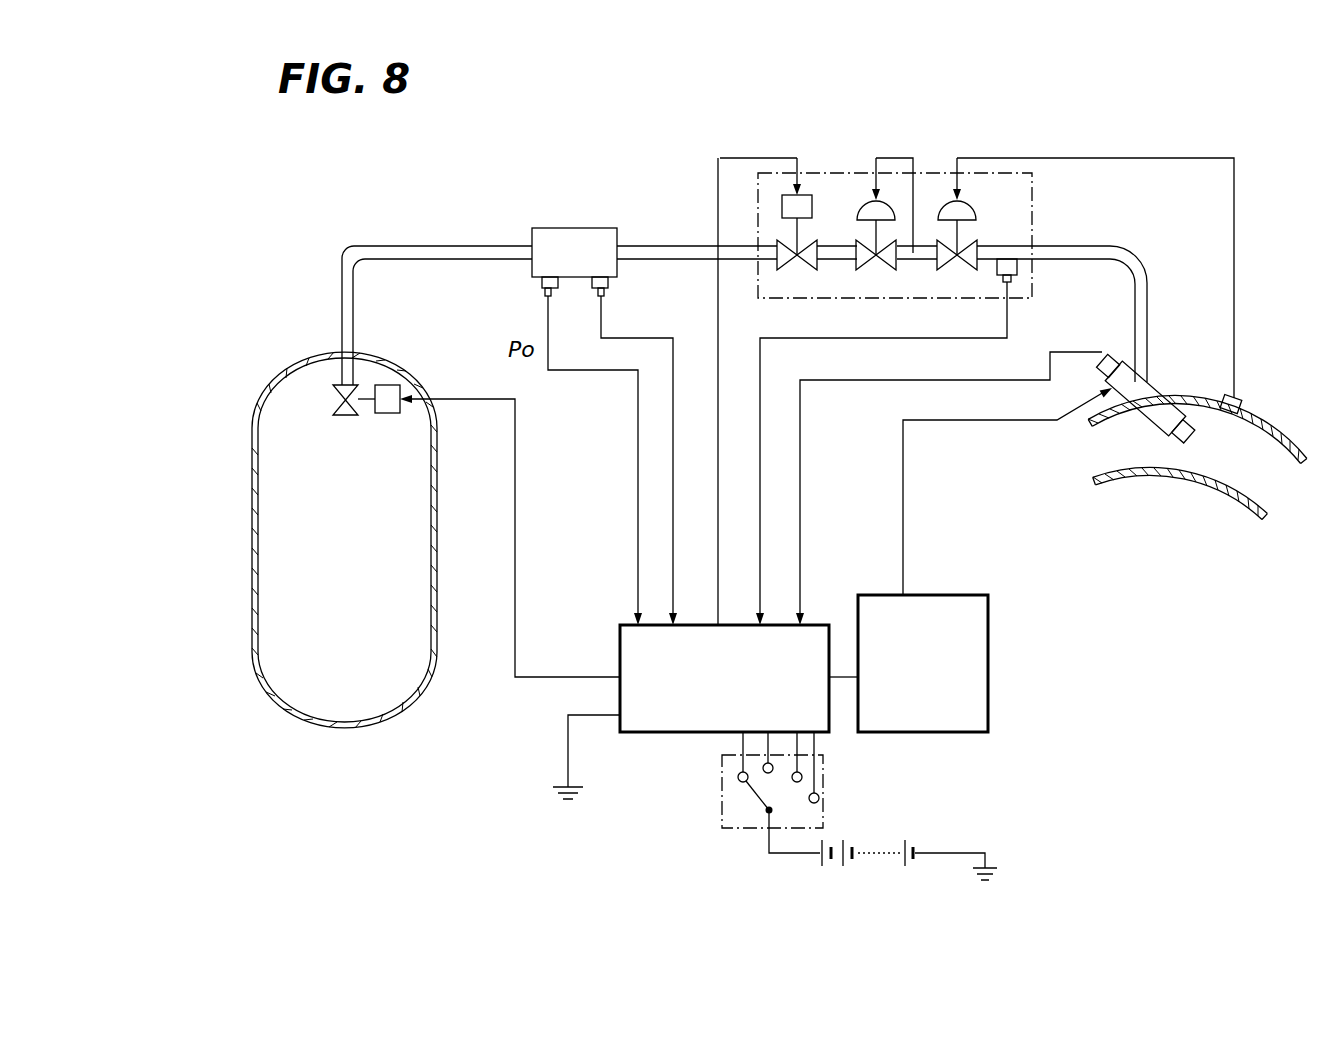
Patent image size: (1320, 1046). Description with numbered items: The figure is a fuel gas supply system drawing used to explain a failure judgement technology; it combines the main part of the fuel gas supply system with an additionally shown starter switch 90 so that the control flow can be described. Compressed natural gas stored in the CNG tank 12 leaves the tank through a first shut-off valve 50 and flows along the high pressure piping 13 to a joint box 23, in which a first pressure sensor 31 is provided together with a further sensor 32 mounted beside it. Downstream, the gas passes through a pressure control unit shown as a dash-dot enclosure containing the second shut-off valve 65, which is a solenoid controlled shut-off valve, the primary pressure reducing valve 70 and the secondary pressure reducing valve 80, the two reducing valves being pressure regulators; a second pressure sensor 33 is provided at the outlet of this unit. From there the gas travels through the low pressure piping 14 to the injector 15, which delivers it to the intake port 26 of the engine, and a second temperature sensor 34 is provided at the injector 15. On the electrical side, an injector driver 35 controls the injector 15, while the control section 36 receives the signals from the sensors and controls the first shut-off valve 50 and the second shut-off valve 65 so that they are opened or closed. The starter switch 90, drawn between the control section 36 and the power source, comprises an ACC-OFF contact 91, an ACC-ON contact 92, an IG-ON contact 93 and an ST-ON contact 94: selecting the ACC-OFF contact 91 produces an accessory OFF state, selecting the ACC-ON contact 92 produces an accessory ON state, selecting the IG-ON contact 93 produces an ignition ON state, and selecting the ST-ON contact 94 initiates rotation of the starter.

The CNG tank 12 is at (250, 547).
The high pressure piping 13 is at (440, 245).
The low pressure piping 14 is at (1118, 249).
The injector 15 is at (1152, 420).
The joint box 23 is at (570, 228).
The intake port 26 is at (1237, 472).
The first pressure sensor 31 is at (538, 293).
The pressure sensor 32 is at (605, 293).
The second pressure sensor 33 is at (1014, 282).
The second temperature sensor 34 is at (1113, 352).
The injector driver 35 is at (907, 733).
The control section 36 is at (665, 733).
The first shut-off valve 50 is at (333, 406).
The second shut-off valve 65 is at (808, 193).
The primary pressure reducing valve 70 is at (882, 198).
The secondary pressure reducing valve 80 is at (966, 197).
The starter switch 90 is at (734, 813).
The ACC-OFF contact 91 is at (737, 778).
The ACC-ON contact 92 is at (762, 763).
The IG-ON contact 93 is at (803, 775).
The ST-ON contact 94 is at (821, 797).